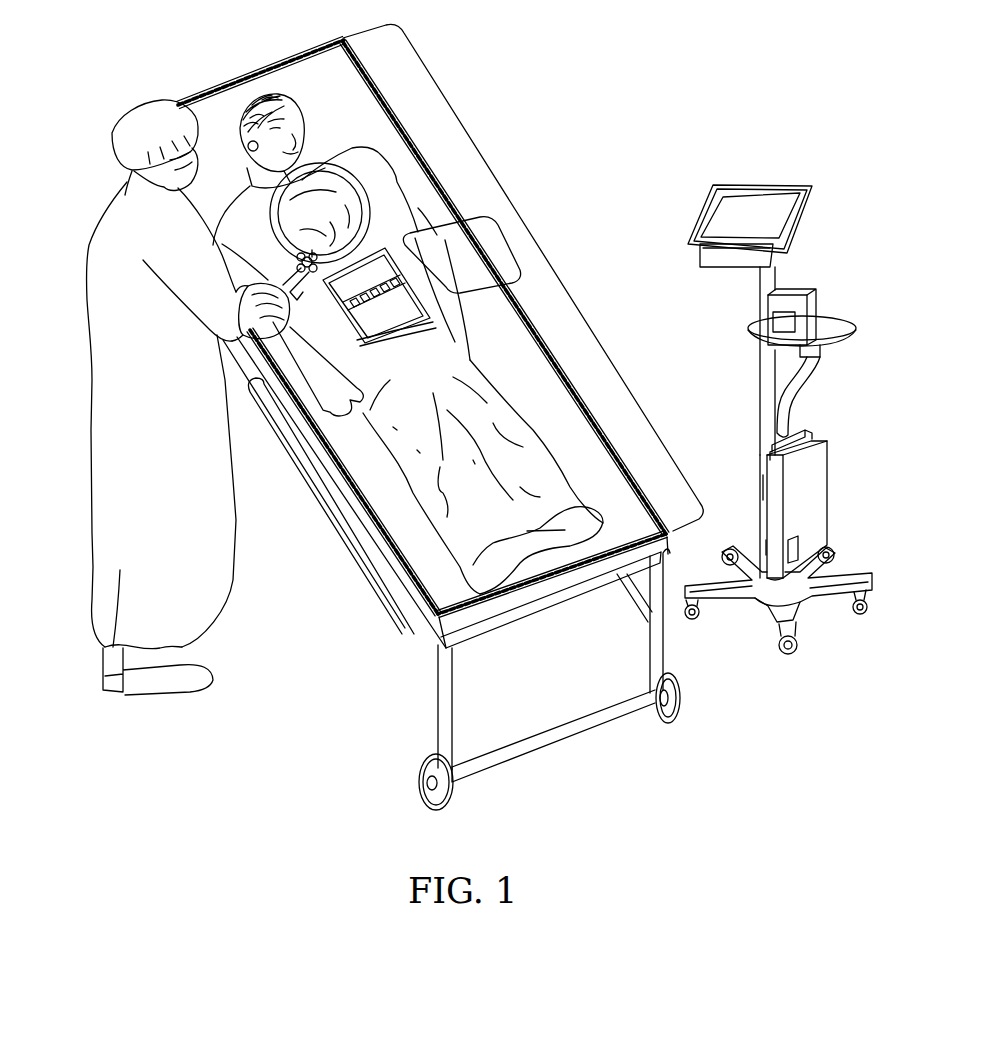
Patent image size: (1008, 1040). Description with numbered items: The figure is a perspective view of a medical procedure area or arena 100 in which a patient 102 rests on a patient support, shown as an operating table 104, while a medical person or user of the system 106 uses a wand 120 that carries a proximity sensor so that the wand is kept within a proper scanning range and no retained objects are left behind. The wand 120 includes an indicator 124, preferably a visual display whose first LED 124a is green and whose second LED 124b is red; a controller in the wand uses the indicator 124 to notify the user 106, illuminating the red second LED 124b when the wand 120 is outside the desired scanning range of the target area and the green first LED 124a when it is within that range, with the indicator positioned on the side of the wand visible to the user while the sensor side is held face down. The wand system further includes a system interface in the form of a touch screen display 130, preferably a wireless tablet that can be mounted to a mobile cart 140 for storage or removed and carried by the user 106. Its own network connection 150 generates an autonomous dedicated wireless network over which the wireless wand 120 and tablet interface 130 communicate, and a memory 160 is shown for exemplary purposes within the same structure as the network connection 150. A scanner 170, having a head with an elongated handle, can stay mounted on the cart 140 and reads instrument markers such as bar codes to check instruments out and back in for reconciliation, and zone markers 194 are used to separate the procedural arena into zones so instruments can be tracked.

The medical procedure area or arena 100 is at (662, 35).
The patient 102 is at (211, 103).
The operating table 104 is at (310, 70).
The medical person or user of the system 106 is at (107, 468).
The wand 120 is at (367, 200).
The indicator 124 is at (310, 228).
The first LED 124a is at (298, 259).
The second LED 124b is at (418, 208).
The touch screen display 130 is at (750, 210).
The mobile cart 140 is at (760, 418).
The network connection 150 is at (825, 497).
The memory 160 is at (780, 547).
The scanner 170 is at (820, 314).
The zone markers 194 is at (505, 243).